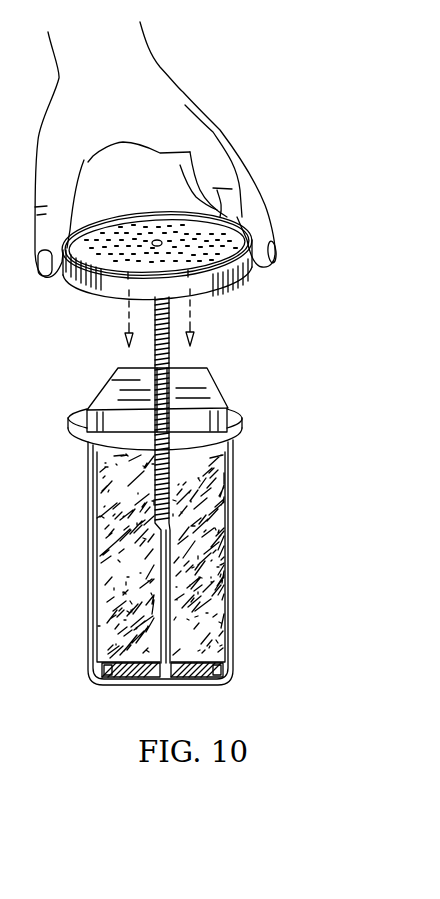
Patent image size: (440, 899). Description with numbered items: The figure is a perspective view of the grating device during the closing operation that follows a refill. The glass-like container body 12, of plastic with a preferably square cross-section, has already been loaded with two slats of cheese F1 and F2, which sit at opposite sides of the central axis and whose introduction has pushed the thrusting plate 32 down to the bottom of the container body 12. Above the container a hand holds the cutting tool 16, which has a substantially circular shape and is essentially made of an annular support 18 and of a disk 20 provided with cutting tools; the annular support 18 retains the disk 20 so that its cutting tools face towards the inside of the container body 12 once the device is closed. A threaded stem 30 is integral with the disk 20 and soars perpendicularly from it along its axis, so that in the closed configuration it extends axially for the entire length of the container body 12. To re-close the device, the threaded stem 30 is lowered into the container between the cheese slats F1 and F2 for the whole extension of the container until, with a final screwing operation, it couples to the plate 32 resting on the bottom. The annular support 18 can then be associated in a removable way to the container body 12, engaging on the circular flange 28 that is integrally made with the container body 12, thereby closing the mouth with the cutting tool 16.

The container body 12 is at (233, 578).
The cutting tool 16 is at (222, 289).
The annular support 18 is at (90, 283).
The disk 20 is at (220, 247).
The circular flange 28 is at (240, 415).
The threaded stem 30 is at (170, 358).
The thrusting plate 32 is at (218, 680).
The slat of cheese F1 is at (115, 525).
The slat of cheese F2 is at (217, 517).